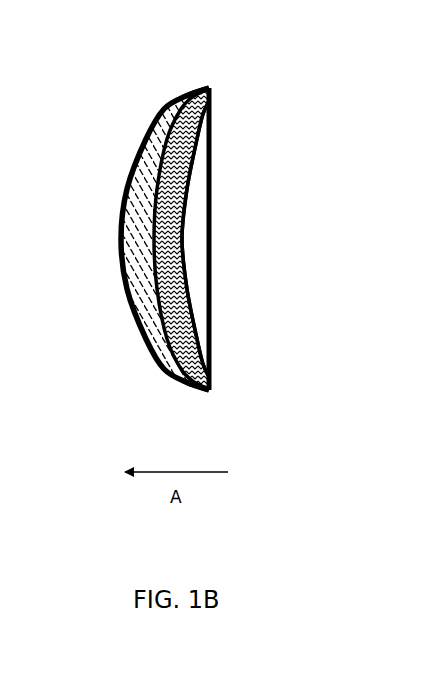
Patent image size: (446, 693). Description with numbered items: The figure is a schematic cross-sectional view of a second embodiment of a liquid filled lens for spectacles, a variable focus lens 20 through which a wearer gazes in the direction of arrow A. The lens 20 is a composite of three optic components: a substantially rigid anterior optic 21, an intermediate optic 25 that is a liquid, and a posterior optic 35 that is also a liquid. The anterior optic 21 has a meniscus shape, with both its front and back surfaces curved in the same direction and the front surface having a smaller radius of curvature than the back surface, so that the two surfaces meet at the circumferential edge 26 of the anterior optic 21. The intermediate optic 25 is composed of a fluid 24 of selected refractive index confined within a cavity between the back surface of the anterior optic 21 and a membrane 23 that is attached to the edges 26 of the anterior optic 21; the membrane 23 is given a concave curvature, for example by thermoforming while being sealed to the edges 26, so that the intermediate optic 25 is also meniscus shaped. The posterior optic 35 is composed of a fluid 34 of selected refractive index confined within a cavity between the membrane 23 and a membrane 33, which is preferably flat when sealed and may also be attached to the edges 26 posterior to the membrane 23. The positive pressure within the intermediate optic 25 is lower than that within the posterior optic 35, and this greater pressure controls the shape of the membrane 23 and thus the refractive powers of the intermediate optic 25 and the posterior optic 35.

The variable focus lens 20 is at (194, 253).
The anterior optic 21 is at (133, 186).
The membrane 23 is at (258, 239).
The fluid 24 is at (190, 131).
The intermediate optic 25 is at (174, 177).
The circumferential edge 26 is at (213, 84).
The membrane 33 is at (210, 348).
The fluid 34 is at (197, 213).
The posterior optic 35 is at (191, 283).